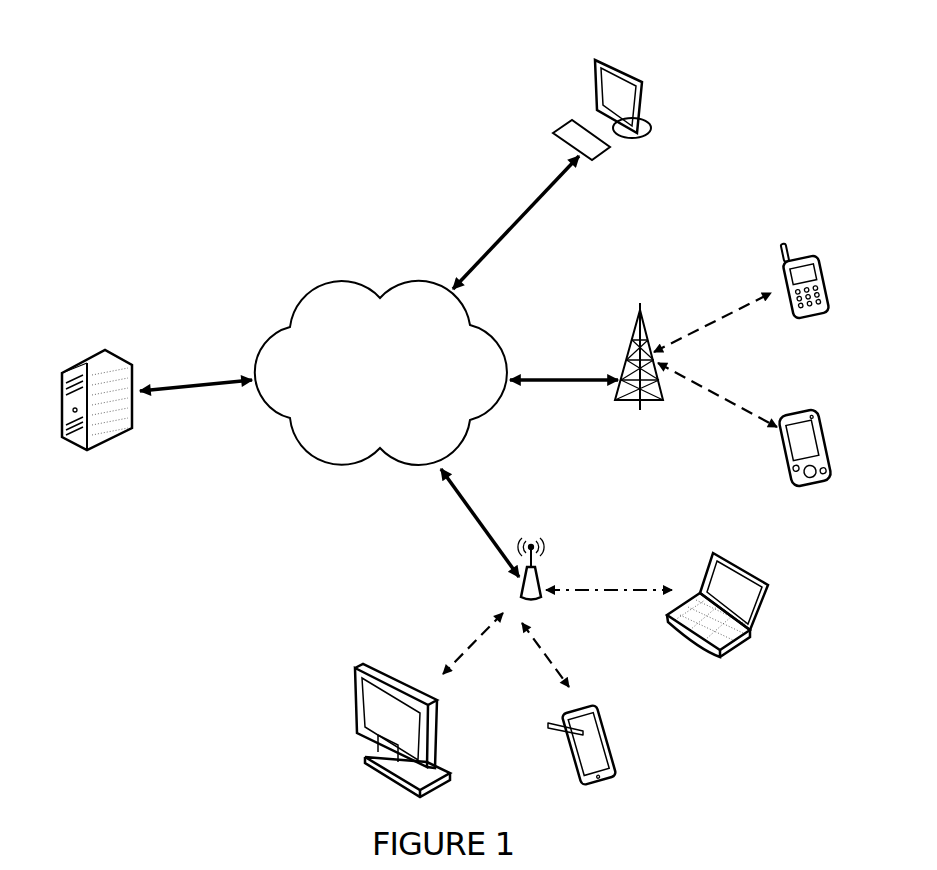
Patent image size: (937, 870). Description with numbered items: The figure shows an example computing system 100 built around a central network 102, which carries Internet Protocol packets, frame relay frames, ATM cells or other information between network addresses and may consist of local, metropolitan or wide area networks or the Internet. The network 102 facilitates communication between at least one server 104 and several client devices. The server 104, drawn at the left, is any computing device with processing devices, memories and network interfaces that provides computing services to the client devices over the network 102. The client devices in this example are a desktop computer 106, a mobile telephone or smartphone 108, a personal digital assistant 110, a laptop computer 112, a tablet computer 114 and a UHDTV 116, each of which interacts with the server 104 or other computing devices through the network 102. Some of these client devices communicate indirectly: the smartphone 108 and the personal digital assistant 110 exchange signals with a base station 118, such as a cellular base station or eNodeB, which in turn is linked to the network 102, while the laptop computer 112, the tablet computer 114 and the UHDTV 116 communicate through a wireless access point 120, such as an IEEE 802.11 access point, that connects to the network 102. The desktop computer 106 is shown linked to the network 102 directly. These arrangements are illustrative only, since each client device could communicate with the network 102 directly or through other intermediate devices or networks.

The computing system 100 is at (151, 119).
The network 102 is at (316, 282).
The server 104 is at (80, 364).
The desktop computer 106 is at (637, 72).
The mobile telephone or smartphone 108 is at (822, 263).
The personal digital assistant 110 is at (814, 417).
The laptop computer 112 is at (757, 573).
The tablet computer 114 is at (610, 717).
The UHDTV 116 is at (355, 668).
The base station 118 is at (629, 354).
The wireless access point 120 is at (541, 566).